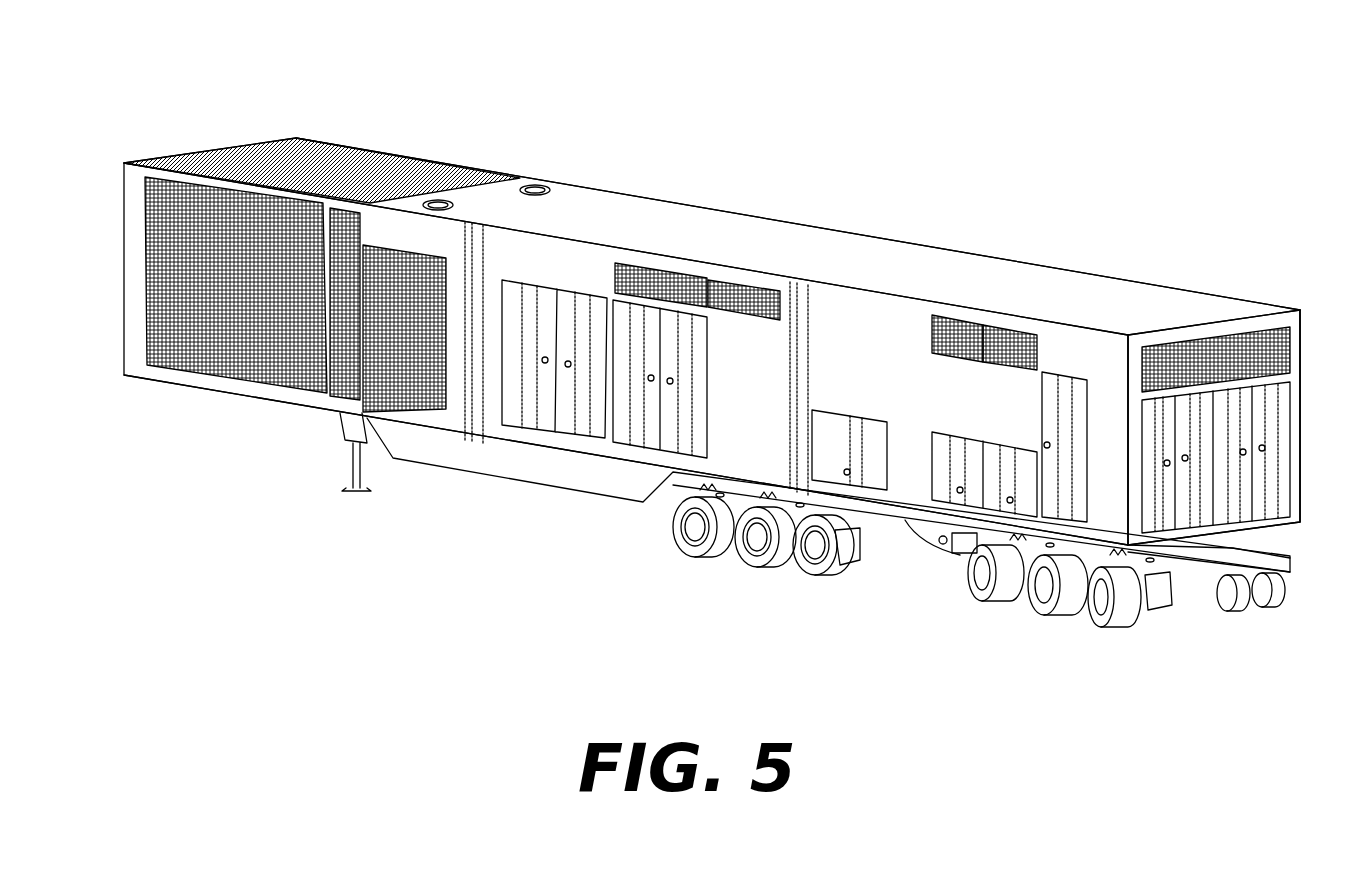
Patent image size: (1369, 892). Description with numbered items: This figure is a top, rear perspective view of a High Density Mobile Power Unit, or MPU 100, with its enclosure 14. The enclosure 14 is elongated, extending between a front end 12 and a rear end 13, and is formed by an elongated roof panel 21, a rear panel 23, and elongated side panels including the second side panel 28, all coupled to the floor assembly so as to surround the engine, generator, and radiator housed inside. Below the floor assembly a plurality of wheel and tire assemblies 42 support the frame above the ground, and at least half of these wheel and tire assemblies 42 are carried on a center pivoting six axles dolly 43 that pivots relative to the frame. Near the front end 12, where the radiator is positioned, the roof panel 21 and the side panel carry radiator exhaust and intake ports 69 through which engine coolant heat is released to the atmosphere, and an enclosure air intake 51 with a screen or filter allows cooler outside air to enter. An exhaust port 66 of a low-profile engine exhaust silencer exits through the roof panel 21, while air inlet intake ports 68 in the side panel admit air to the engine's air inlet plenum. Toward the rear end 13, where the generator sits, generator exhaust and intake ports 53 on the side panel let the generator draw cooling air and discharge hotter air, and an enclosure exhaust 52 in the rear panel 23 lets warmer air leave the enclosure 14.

The front end 12 is at (106, 193).
The rear end 13 is at (1317, 397).
The enclosure 14 is at (1300, 310).
The roof panel 21 is at (818, 260).
The rear panel 23 is at (1295, 462).
The second side panel 28 is at (487, 427).
The wheel and tire assemblies 42 is at (752, 543).
The center pivoting six axles dolly 43 is at (950, 560).
The enclosure air intake 51 is at (395, 352).
The enclosure exhaust 52 is at (1202, 355).
The generator exhaust and intake ports 53 is at (963, 342).
The exhaust port 66 is at (533, 188).
The air inlet intake port 68 is at (743, 310).
The radiator exhaust and intake ports 69 is at (315, 172).
The MPU 100 is at (731, 172).